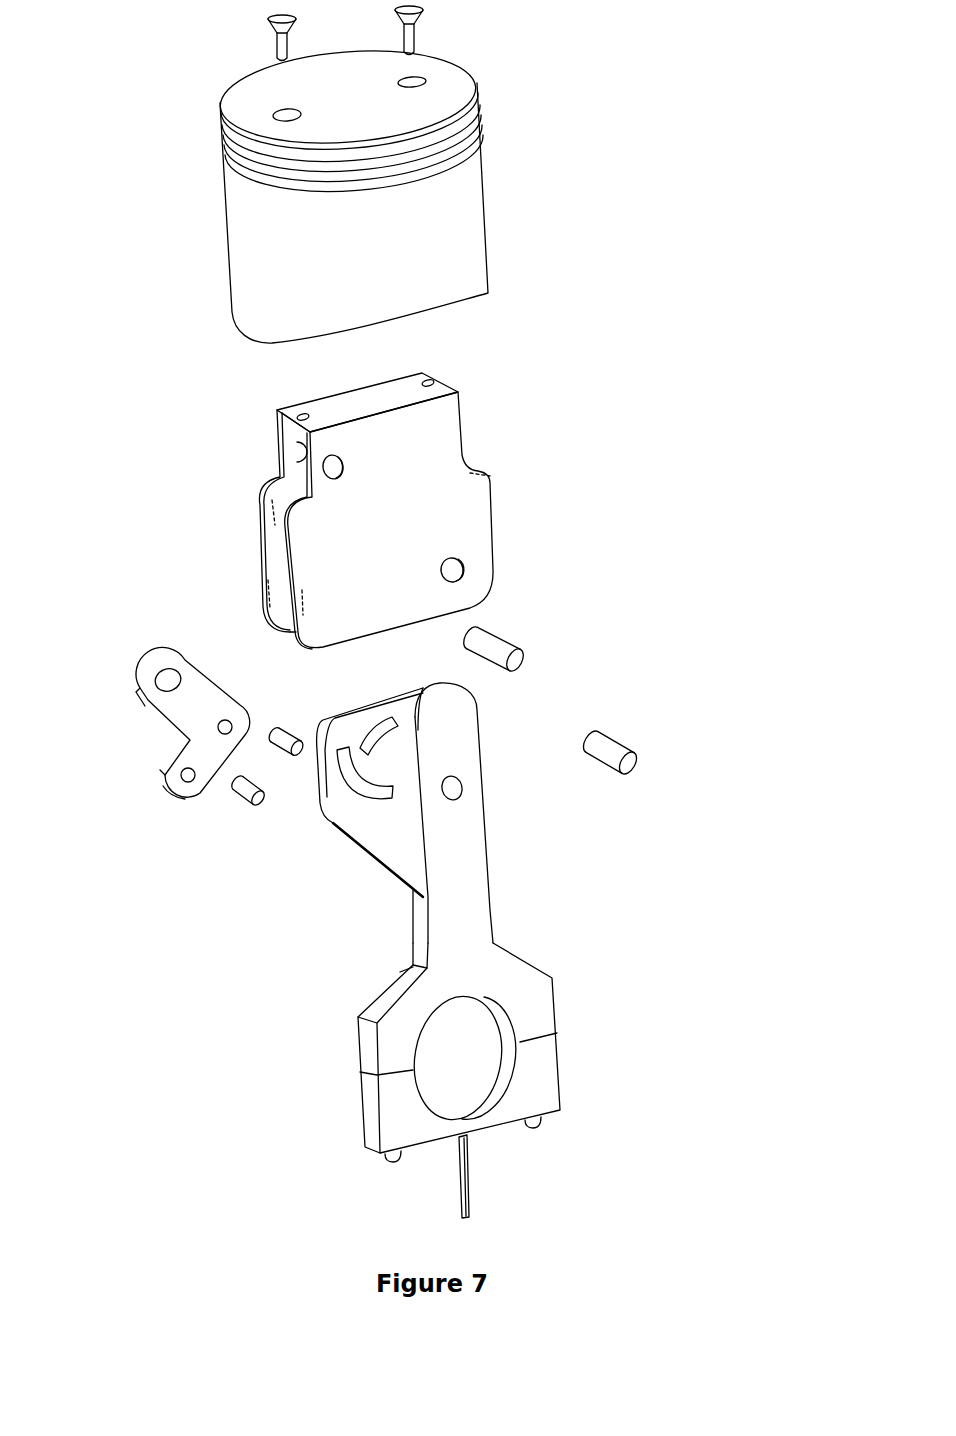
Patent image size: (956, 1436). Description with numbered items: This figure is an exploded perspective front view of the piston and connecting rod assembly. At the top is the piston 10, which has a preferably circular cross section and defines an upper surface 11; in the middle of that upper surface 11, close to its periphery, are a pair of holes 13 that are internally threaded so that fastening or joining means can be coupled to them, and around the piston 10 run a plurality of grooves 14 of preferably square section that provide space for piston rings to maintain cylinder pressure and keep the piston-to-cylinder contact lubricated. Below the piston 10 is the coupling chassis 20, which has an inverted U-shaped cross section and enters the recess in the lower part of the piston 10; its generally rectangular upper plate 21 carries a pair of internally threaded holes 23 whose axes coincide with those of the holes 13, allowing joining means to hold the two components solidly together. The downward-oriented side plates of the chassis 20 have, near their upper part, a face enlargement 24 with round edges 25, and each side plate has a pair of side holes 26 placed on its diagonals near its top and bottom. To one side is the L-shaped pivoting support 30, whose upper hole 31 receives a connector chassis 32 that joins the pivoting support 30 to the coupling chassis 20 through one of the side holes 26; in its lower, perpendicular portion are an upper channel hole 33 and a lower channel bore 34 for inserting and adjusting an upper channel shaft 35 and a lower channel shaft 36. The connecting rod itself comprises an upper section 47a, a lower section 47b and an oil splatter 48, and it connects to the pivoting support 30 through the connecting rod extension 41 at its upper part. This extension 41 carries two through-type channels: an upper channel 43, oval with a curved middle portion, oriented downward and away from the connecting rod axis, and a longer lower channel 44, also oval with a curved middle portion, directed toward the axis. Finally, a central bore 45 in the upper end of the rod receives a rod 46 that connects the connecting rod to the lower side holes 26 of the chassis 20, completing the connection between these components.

The piston 10 is at (467, 268).
The upper surface 11 is at (440, 90).
The holes 13 is at (287, 110).
The grooves 14 is at (477, 118).
The coupling chassis 20 is at (214, 491).
The upper plate 21 is at (357, 405).
The holes 23 is at (300, 412).
The face enlargement 24 is at (267, 598).
The round edges 25 is at (493, 477).
The side holes 26 is at (300, 455).
The pivoting support 30 is at (188, 726).
The upper hole 31 is at (160, 678).
The connector chassis 32 is at (496, 662).
The upper channel hole 33 is at (230, 723).
The lower channel bore 34 is at (186, 782).
The upper channel shaft 35 is at (287, 737).
The lower channel shaft 36 is at (253, 800).
The connecting rod extension 41 is at (425, 939).
The upper channel 43 is at (378, 732).
The lower channel 44 is at (357, 787).
The central bore 45 is at (460, 792).
The rod 46 is at (610, 745).
The upper section 47a is at (378, 1010).
The lower section 47b is at (393, 1123).
The oil splatter 48 is at (467, 1202).